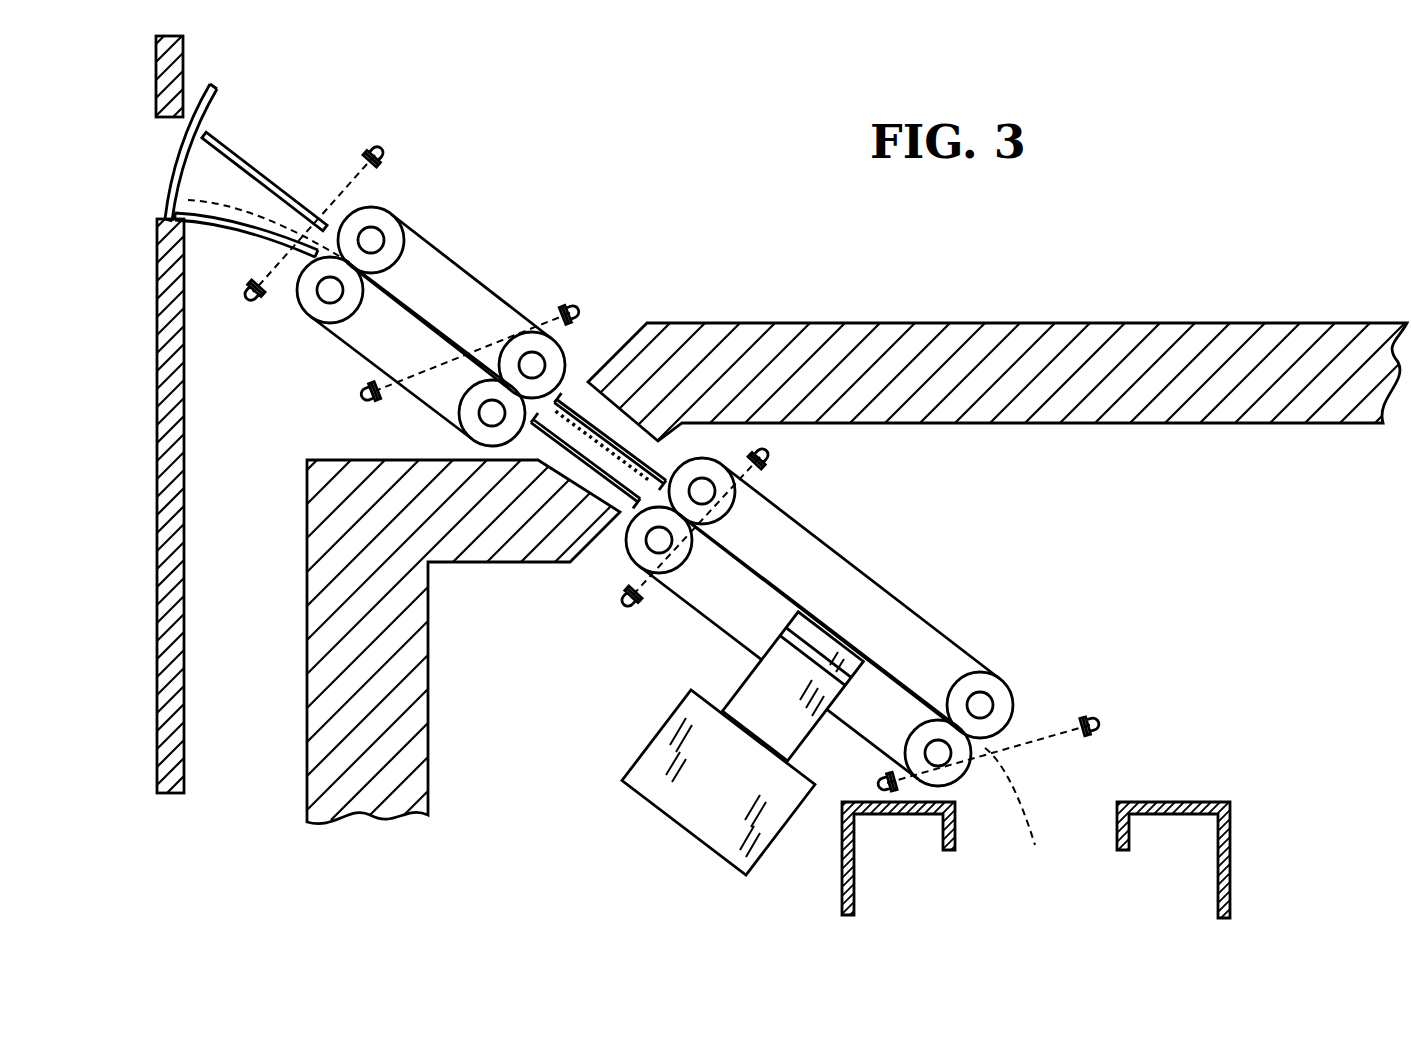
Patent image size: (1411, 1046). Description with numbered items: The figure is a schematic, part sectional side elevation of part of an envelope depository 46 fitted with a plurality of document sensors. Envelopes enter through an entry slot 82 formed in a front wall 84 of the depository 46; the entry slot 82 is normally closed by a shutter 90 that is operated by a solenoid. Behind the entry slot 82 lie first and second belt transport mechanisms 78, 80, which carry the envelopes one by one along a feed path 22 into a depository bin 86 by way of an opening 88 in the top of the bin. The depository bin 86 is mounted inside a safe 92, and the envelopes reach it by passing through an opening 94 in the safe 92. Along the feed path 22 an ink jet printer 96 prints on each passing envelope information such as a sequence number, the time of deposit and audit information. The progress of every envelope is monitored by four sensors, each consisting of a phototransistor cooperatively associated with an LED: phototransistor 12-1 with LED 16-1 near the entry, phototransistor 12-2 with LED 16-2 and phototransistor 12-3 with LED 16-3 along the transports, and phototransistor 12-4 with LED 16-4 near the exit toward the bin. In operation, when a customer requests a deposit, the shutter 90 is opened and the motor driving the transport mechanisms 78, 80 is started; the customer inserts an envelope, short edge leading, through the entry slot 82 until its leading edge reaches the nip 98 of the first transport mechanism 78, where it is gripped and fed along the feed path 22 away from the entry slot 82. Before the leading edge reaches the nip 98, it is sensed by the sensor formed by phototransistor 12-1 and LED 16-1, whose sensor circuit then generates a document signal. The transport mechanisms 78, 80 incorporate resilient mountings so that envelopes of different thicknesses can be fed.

The envelope depository 46 is at (805, 219).
The entry slot 82 is at (156, 114).
The front wall 84 is at (160, 292).
The shutter 90 is at (216, 92).
The nip 98 is at (357, 210).
The first belt transport mechanism 78 is at (434, 313).
The second belt transport mechanism 80 is at (895, 582).
The safe 92 is at (943, 322).
The opening in the safe 94 is at (660, 443).
The ink jet printer 96 is at (631, 778).
The feed path 22 is at (676, 518).
The phototransistor 12-1 is at (387, 151).
The LED 16-1 is at (263, 307).
The phototransistor 12-2 is at (582, 298).
The LED 16-2 is at (360, 401).
The phototransistor 12-3 is at (775, 457).
The LED 16-3 is at (622, 611).
The phototransistor 12-4 is at (1105, 727).
The LED 16-4 is at (883, 775).
The opening 88 is at (1116, 810).
The depository bin 86 is at (1233, 873).